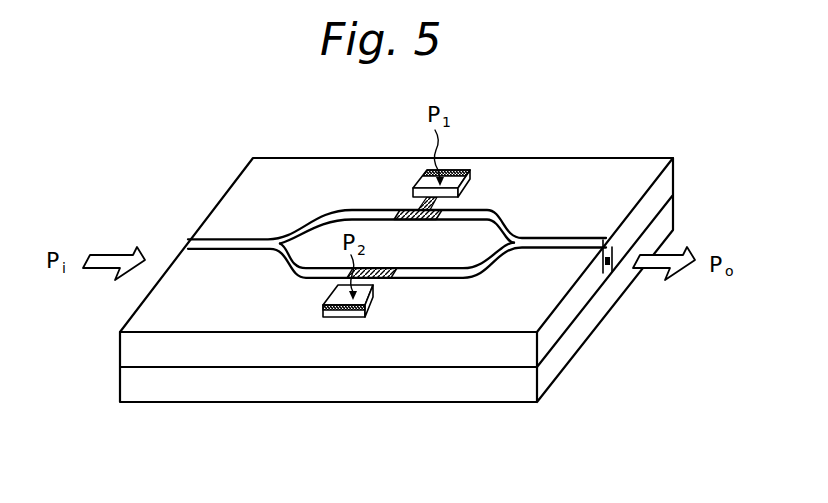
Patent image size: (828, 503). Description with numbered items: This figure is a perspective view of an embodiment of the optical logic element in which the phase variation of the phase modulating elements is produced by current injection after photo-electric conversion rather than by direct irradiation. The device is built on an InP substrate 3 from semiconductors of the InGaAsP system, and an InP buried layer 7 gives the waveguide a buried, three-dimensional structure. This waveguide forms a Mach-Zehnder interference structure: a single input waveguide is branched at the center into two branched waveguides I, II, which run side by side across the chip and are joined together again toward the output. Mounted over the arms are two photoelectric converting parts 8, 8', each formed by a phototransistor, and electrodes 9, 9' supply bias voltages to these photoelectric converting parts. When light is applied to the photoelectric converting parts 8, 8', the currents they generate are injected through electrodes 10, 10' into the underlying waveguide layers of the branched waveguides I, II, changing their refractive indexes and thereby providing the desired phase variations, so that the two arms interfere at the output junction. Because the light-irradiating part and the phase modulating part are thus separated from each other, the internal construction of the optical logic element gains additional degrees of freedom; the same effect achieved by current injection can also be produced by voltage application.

The InP substrate 3 is at (493, 382).
The InP buried layer 7 is at (448, 353).
The photoelectric converting part 8 is at (465, 186).
The photoelectric converting part 8' is at (352, 366).
The electrode 9 is at (464, 144).
The electrode 9' is at (333, 376).
The electrode 10 is at (403, 196).
The electrode 10' is at (394, 294).
The branched waveguide I is at (321, 215).
The branched waveguide II is at (281, 267).